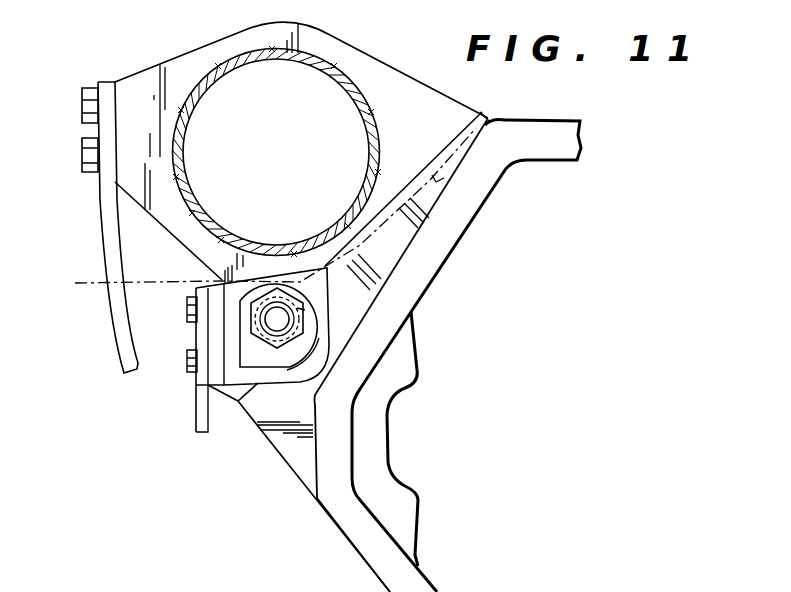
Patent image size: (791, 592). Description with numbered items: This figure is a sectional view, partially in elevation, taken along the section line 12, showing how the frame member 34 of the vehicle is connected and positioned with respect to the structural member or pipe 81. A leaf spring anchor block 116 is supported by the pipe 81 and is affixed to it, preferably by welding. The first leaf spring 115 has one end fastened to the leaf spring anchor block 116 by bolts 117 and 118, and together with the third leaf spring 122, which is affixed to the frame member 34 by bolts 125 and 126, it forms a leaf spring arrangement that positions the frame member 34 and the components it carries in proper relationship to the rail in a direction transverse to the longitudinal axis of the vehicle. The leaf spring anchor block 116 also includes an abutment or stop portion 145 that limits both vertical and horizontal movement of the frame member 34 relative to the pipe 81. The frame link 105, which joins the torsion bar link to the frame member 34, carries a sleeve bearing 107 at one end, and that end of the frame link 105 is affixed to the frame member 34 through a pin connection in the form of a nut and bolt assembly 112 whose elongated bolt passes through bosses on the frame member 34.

The leaf spring anchor block 116 is at (185, 62).
The pipe 81 is at (361, 108).
The abutment or stop portion 145 is at (483, 114).
The frame member 34 is at (483, 198).
The section line 12 is at (87, 283).
The bolt 117 is at (86, 106).
The bolt 118 is at (86, 156).
The first leaf spring 115 is at (118, 330).
The bolt 125 is at (187, 309).
The bolt 126 is at (187, 363).
The third leaf spring 122 is at (197, 415).
The frame link 105 is at (252, 357).
The nut and bolt assembly 112 is at (278, 328).
The sleeve bearing 107 is at (292, 312).